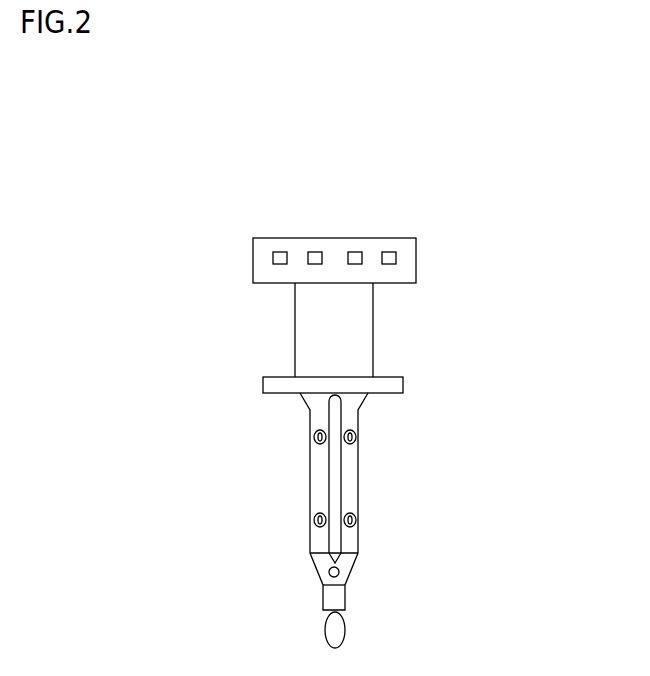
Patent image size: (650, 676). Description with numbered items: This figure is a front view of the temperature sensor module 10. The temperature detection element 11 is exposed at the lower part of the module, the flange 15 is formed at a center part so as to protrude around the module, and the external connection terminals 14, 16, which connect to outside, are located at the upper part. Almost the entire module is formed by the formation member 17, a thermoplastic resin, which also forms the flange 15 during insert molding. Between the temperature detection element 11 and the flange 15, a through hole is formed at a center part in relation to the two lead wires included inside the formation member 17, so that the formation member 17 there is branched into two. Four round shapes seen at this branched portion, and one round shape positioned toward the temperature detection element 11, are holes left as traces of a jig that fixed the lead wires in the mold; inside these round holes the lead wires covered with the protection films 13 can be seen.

The temperature sensor module 10 is at (632, 132).
The temperature detection element 11 is at (346, 628).
The protection film 13 is at (356, 520).
The external connection terminal 14 is at (357, 252).
The flange 15 is at (405, 385).
The external connection terminal 16 is at (276, 255).
The formation member 17 is at (295, 353).